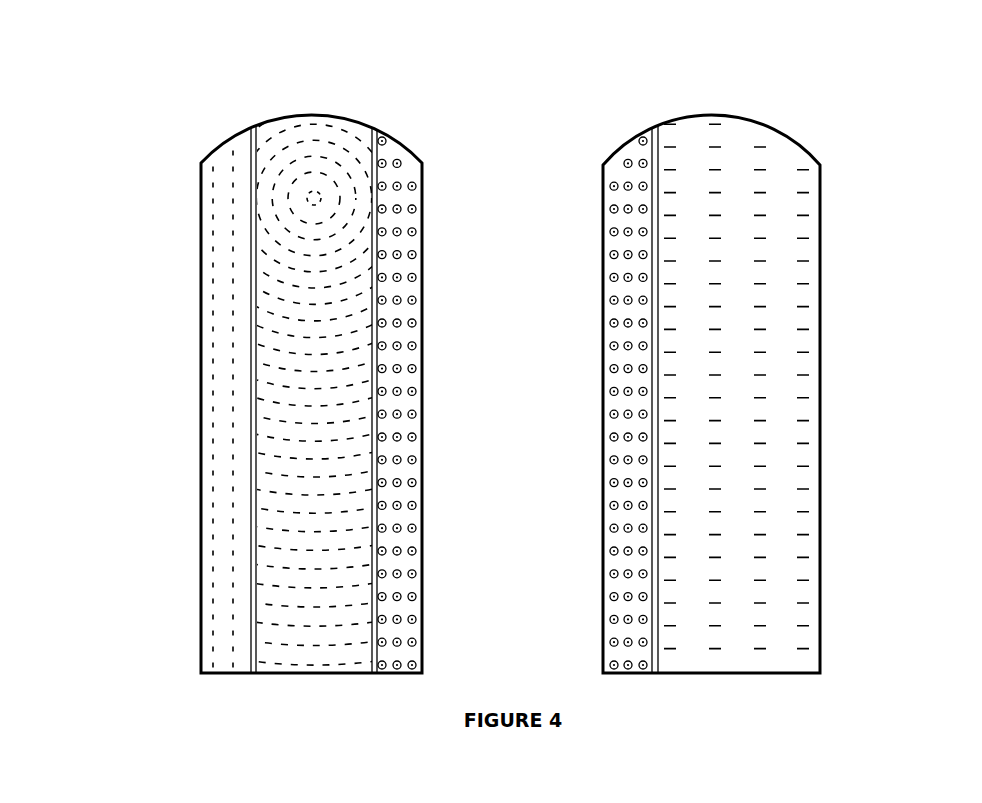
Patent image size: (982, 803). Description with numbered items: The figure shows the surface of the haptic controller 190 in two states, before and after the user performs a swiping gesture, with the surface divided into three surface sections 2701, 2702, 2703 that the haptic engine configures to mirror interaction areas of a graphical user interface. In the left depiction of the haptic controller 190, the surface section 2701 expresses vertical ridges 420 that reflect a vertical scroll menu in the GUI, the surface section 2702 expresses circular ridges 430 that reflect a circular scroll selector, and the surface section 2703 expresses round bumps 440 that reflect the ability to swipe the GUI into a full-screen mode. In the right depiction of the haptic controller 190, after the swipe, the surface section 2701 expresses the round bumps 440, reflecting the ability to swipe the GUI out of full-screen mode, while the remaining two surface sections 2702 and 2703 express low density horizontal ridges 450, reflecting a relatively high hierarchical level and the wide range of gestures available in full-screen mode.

The haptic controller 190 is at (423, 362).
The surface section 2701 is at (202, 553).
The surface section 2702 is at (792, 82).
The surface section 2703 is at (404, 238).
The vertical ridges 420 is at (224, 227).
The circular ridges 430 is at (325, 130).
The round bumps 440 is at (512, 403).
The low density horizontal ridges 450 is at (799, 268).